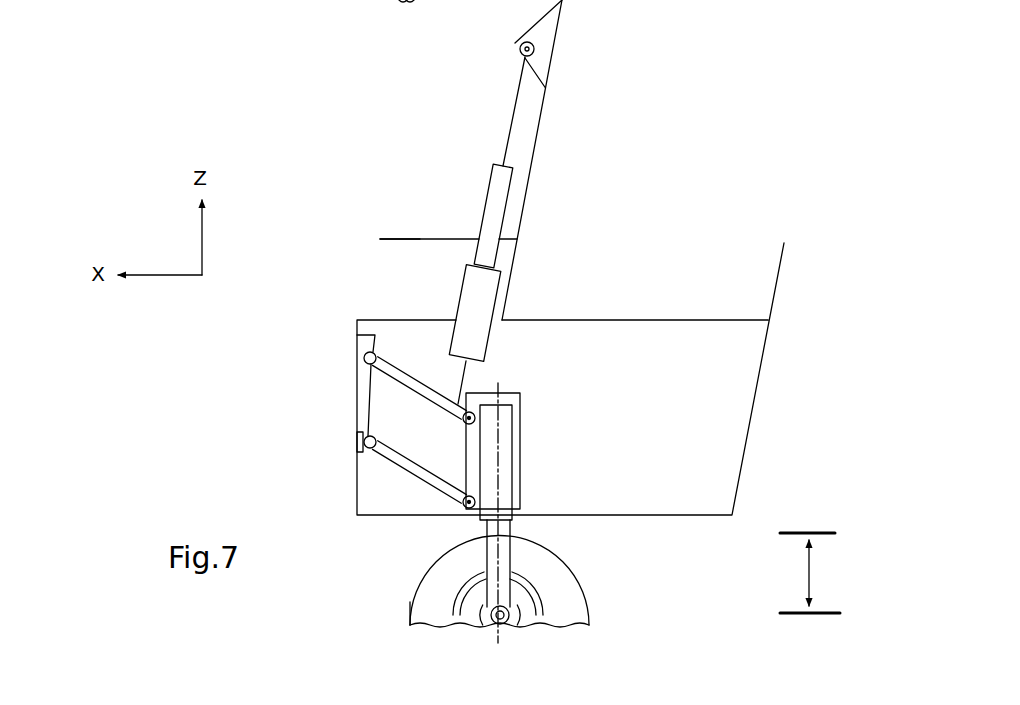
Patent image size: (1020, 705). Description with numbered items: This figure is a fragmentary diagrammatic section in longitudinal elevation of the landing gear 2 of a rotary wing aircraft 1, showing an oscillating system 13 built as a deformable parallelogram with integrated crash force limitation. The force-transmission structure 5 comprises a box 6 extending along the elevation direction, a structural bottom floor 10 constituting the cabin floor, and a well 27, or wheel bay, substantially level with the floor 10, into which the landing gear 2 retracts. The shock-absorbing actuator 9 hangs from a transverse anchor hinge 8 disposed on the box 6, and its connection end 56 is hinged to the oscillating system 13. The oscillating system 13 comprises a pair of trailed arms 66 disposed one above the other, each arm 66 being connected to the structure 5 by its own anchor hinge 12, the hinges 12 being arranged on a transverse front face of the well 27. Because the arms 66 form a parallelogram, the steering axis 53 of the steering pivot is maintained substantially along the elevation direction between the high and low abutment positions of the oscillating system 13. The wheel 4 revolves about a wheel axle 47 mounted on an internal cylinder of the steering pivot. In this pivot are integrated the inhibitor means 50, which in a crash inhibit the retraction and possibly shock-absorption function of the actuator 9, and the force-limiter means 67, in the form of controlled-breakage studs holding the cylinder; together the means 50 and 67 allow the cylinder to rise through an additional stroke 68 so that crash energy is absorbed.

The rotary wing aircraft 1 is at (444, 136).
The landing gear 2 is at (599, 561).
The wheel 4 is at (402, 600).
The force-transmission structure 5 is at (537, 142).
The box 6 is at (687, 78).
The hinge 8 is at (519, 48).
The shock-absorbing actuator 9 is at (471, 231).
The structural bottom floor 10 is at (371, 291).
The anchor hinge 12 is at (364, 359).
The oscillating system 13 is at (354, 398).
The well 27 is at (722, 412).
The wheel axle 47 is at (505, 620).
The inhibitor means 50 is at (487, 285).
The steering axis 53 is at (498, 430).
The connection end 56 is at (447, 412).
The trailed arms 66 is at (412, 380).
The force-limiter means 67 is at (505, 485).
The additional stroke 68 is at (808, 578).